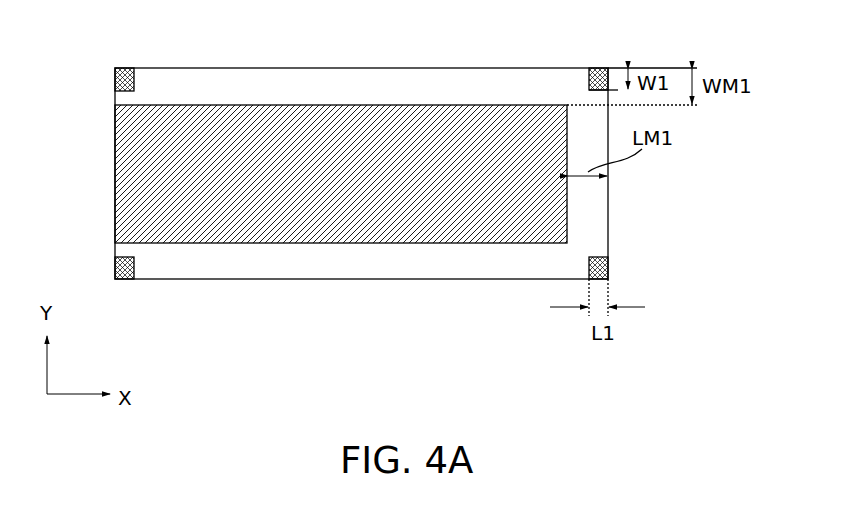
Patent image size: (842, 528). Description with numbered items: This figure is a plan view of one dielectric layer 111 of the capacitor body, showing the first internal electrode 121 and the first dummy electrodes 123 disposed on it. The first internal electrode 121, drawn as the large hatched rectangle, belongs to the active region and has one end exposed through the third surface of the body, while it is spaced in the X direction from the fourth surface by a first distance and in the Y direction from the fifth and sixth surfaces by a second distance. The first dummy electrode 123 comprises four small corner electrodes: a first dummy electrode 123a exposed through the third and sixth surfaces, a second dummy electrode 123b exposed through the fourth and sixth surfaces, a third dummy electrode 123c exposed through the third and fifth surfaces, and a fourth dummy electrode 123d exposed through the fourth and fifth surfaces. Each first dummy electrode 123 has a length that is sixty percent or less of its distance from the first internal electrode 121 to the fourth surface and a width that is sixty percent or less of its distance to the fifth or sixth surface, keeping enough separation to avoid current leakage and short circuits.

The dielectric layer 111 is at (448, 82).
The first internal electrode 121 is at (205, 118).
The first dummy electrode 123 is at (733, 178).
The 1-1 dummy electrode 123a is at (122, 68).
The 1-2 dummy electrode 123b is at (600, 68).
The 1-3 dummy electrode 123c is at (114, 268).
The 1-4 dummy electrode 123d is at (590, 262).